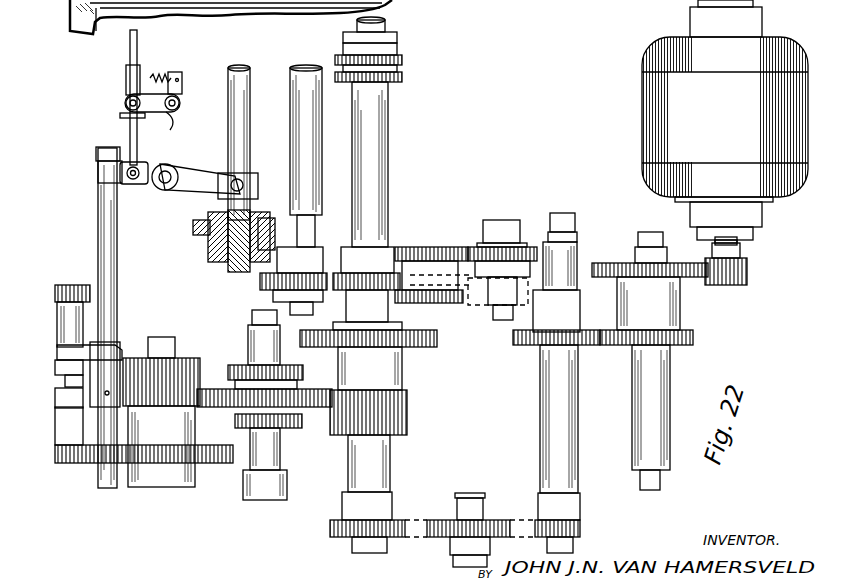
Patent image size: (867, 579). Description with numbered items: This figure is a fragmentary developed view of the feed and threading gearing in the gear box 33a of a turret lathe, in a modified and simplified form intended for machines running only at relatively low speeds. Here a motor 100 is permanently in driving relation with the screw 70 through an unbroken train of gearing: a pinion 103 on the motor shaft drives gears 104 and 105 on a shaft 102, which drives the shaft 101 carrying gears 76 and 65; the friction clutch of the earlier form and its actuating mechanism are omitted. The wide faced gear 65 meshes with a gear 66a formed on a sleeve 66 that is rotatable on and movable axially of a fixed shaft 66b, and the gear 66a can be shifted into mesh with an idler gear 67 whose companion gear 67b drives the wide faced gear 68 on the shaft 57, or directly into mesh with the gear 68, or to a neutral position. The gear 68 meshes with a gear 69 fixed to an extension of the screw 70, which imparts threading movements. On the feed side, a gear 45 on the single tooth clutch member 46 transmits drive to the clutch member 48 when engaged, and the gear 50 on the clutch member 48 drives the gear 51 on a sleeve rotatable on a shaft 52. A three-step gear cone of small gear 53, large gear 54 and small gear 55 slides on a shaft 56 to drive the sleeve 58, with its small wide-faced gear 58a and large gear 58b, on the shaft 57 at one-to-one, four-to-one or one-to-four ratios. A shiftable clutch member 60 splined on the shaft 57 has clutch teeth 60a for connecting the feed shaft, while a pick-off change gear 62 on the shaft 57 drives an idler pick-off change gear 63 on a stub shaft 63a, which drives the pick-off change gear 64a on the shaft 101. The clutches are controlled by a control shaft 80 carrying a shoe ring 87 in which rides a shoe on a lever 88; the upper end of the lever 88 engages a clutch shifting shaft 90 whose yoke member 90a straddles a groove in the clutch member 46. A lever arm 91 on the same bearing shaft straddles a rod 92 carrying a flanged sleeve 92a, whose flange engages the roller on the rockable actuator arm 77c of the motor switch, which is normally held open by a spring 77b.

The gear box 33a is at (265, 42).
The gear 45 is at (67, 277).
The clutch member 46 is at (92, 318).
The clutch member 48 is at (73, 402).
The gear 50 is at (144, 474).
The gear 51 is at (174, 459).
The shaft 52 is at (161, 349).
The small gear 53 is at (271, 442).
The large gear 54 is at (264, 376).
The small gear 55 is at (262, 349).
The shaft 56 is at (265, 505).
The shaft 57 is at (379, 287).
The sleeve 58 is at (385, 371).
The small wide-faced gear 58a is at (383, 417).
The large gear 58b is at (377, 356).
The shiftable clutch member 60 is at (379, 63).
The clutch teeth 60a is at (391, 38).
The pick-off change gear 62 is at (370, 525).
The idler pick-off change gear 63 is at (470, 524).
The stub shaft 63a is at (470, 486).
The pick-off change gear 64a is at (540, 510).
The wide faced gear 65 is at (546, 263).
The sleeve 66 is at (494, 296).
The gear 66a is at (492, 233).
The fixed shaft 66b is at (502, 212).
The idler gear 67 is at (432, 254).
The gear 67b is at (429, 318).
The wide faced gear 68 is at (357, 278).
The gear 69 is at (274, 281).
The screw 70 is at (288, 156).
The gear 76 is at (534, 348).
The spring 77b is at (162, 64).
The actuator arm 77c is at (159, 130).
The control shaft 80 is at (225, 142).
The shoe ring 87 is at (246, 173).
The lever 88 is at (181, 166).
The clutch shifting shaft 90 is at (91, 317).
The yoke member 90a is at (102, 359).
The lever arm 91 is at (139, 198).
The rod 92 is at (134, 120).
The flanged sleeve 92a is at (115, 97).
The motor 100 is at (705, 122).
The shaft 101 is at (544, 419).
The shaft 102 is at (631, 417).
The pinion 103 is at (742, 266).
The gear 104 is at (650, 272).
The gear 105 is at (664, 346).